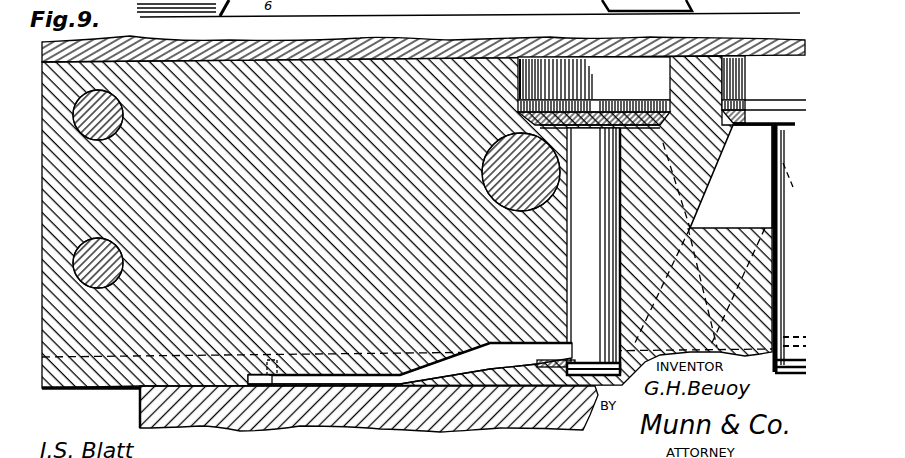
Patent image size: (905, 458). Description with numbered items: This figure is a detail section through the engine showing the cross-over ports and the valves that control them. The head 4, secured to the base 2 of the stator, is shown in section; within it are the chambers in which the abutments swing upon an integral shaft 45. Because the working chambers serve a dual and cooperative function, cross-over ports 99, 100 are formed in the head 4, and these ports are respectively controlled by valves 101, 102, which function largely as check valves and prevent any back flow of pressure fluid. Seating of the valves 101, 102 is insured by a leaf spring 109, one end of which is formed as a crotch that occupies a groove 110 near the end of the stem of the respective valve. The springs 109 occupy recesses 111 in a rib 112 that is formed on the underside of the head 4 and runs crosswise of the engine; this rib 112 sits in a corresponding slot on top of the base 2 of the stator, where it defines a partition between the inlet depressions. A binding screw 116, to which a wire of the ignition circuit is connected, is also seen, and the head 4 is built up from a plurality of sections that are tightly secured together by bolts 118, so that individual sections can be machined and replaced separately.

The base 2 is at (297, 424).
The head 4 is at (62, 168).
The integral shaft 45 is at (497, 143).
The cross-over port 99 is at (704, 191).
The cross-over port 100 is at (745, 72).
The valve 101 is at (597, 107).
The valve 102 is at (760, 99).
The leaf spring 109 is at (457, 378).
The groove 110 is at (593, 376).
The recess 111 is at (502, 344).
The rib 112 is at (135, 373).
The binding screw 116 is at (93, 284).
The bolt 118 is at (112, 104).